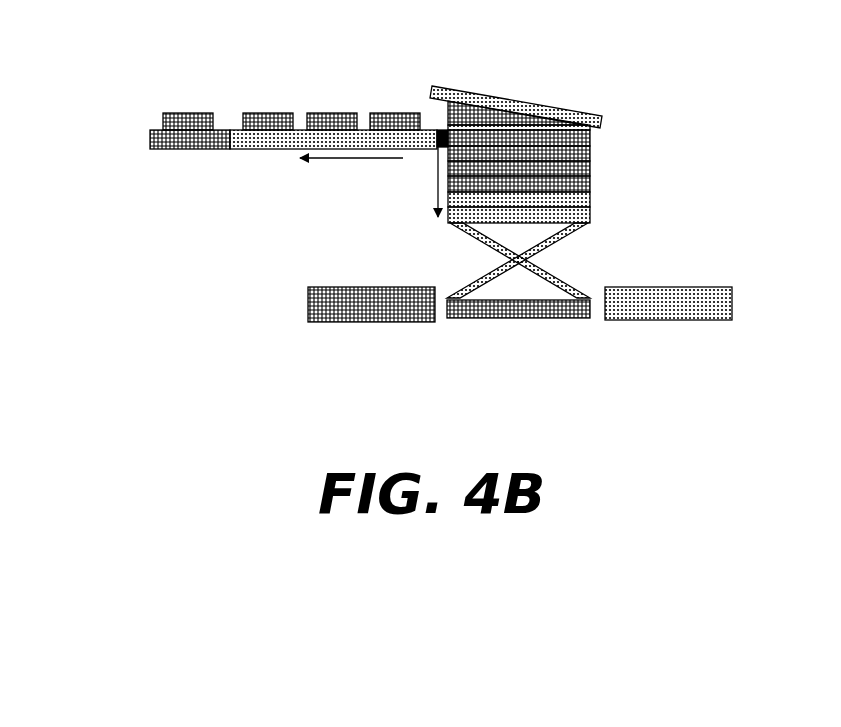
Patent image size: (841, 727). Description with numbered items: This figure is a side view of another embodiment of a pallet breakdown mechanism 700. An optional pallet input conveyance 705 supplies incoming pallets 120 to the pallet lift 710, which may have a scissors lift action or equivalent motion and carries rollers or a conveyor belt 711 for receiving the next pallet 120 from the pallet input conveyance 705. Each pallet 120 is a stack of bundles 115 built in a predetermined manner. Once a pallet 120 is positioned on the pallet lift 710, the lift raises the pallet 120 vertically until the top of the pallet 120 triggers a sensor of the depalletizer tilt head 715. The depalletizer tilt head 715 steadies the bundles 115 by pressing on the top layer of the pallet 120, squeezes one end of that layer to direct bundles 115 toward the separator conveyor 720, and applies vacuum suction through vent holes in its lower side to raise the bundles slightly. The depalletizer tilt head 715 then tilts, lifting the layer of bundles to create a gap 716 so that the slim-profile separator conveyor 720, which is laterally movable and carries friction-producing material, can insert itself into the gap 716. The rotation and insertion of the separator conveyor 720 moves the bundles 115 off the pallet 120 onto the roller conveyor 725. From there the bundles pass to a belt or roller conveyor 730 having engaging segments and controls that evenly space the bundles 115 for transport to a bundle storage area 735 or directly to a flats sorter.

The pallet breakdown mechanism 700 is at (726, 136).
The pallet input conveyance 705 is at (684, 312).
The pallet lift 710 is at (517, 318).
The conveyor belt 711 is at (589, 206).
The depalletizer tilt head 715 is at (557, 108).
The gap 716 is at (447, 110).
The separator conveyor 720 is at (435, 147).
The roller conveyor 725 is at (245, 150).
The belt or roller conveyor 730 is at (150, 141).
The bundle storage area 735 is at (361, 322).
The bundle 115 is at (278, 113).
The pallet 120 is at (574, 174).